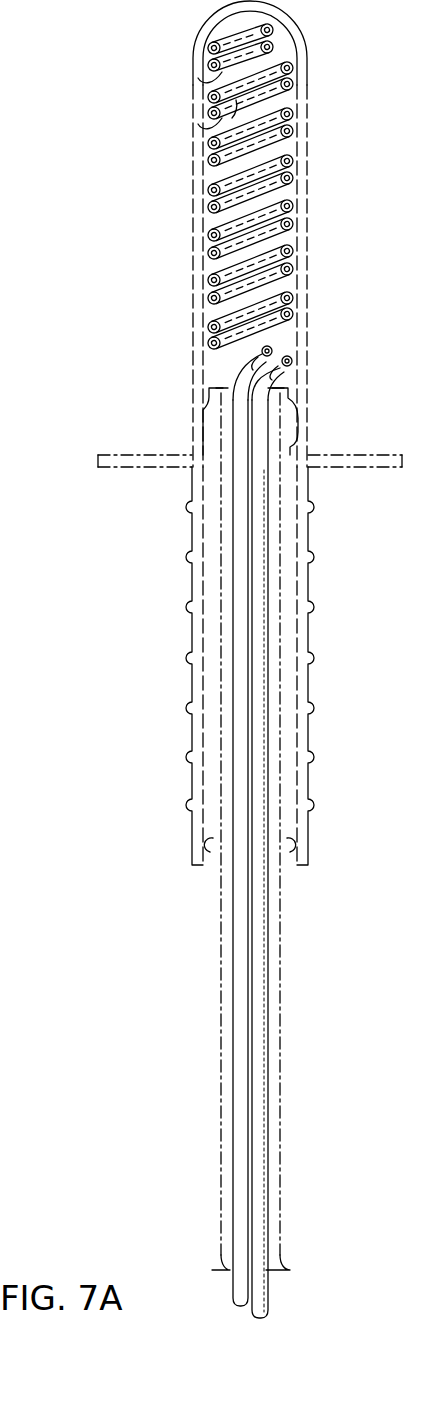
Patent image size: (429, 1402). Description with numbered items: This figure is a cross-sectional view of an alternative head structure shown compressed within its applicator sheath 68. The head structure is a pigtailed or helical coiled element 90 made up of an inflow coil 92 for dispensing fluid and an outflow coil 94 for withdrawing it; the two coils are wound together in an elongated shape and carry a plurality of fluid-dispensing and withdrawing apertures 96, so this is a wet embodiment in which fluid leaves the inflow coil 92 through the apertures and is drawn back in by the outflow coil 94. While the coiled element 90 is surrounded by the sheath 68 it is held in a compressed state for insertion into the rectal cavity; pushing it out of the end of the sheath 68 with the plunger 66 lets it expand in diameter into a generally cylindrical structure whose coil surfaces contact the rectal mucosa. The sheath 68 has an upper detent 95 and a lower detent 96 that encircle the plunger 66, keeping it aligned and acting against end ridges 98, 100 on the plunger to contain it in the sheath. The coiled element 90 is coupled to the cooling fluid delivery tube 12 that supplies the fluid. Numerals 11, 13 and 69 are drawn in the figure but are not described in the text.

The first thermocouple tube 11 is at (242, 1282).
The cooling fluid delivery tube 12 is at (267, 1311).
The second thermocouple tube 13 is at (257, 1288).
The plunger 66 is at (220, 1050).
The sheath 68 is at (306, 320).
The closed dome end of protective tube 69 is at (307, 26).
The coiled element 90 is at (233, 466).
The inflow coil 92 is at (212, 335).
The outflow coil 94 is at (210, 257).
The upper detent 95 is at (300, 447).
The fluid-dispensing and withdrawing apertures 96 is at (212, 123).
The end ridge 98 is at (290, 392).
The end ridge 100 is at (290, 1271).